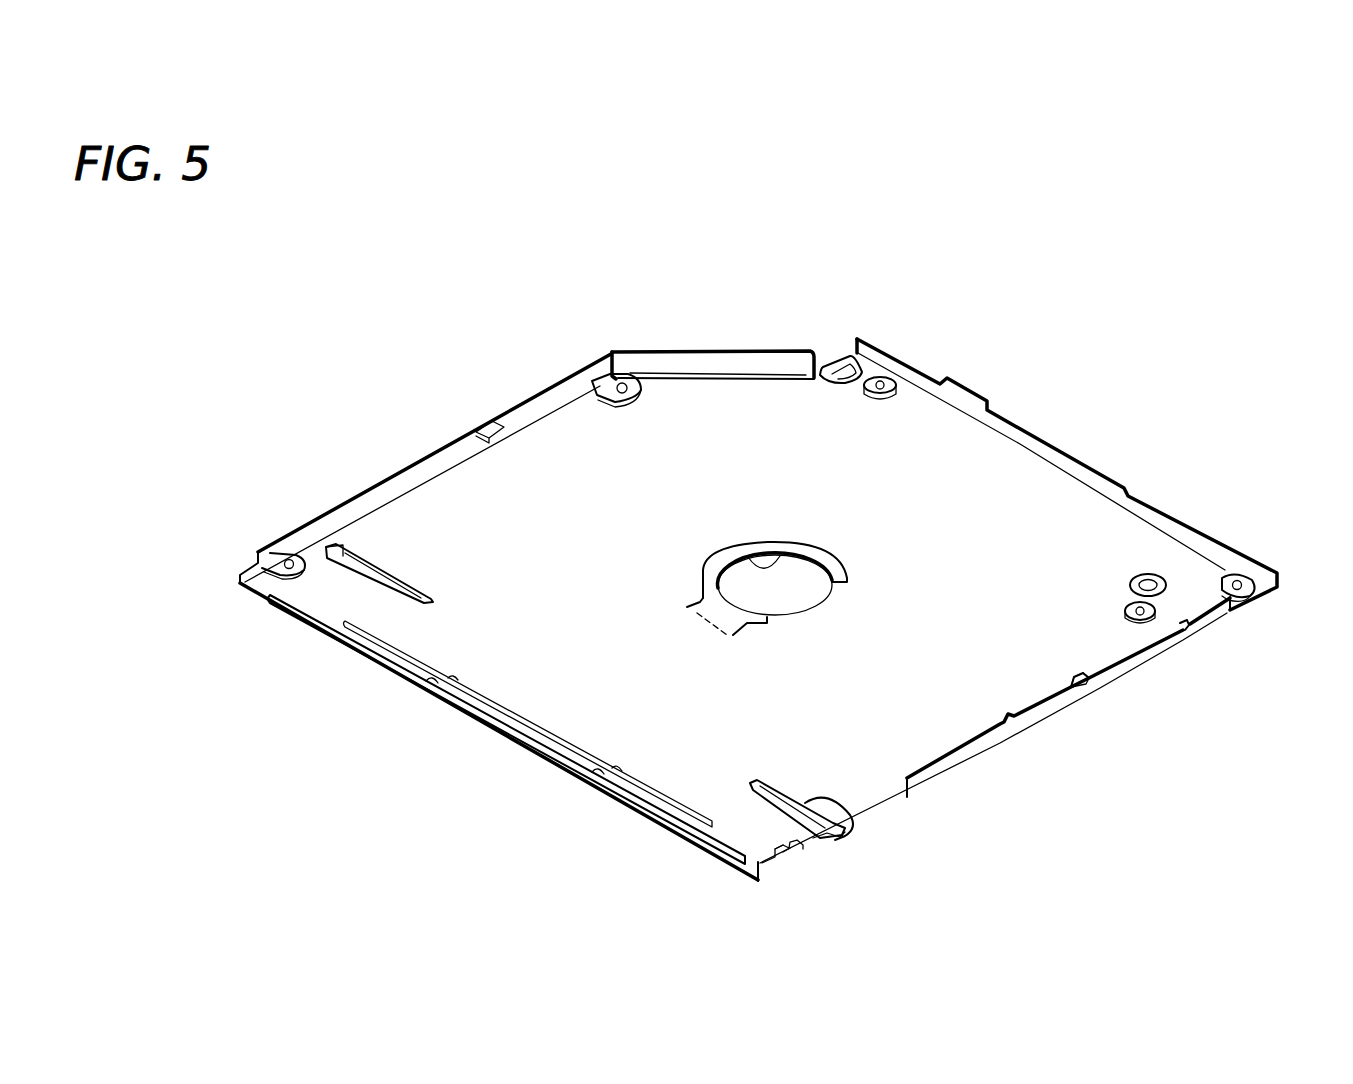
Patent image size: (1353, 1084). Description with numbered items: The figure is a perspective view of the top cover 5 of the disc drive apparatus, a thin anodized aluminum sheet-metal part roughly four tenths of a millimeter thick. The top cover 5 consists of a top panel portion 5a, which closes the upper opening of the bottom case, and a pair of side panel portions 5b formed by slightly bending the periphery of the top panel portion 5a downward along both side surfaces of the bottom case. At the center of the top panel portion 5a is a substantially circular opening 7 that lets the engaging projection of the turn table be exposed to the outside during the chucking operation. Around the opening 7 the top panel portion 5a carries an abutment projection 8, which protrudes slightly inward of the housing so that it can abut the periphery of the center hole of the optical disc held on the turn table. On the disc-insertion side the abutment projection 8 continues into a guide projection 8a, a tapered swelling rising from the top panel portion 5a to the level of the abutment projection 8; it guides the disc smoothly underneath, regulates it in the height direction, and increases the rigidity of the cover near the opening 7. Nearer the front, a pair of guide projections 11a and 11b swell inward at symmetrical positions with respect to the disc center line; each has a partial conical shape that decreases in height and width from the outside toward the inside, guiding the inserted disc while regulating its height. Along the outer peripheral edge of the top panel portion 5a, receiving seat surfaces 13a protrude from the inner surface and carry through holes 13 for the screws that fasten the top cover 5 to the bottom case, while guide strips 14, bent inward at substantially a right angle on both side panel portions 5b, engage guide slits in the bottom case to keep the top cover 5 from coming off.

The top cover 5 is at (758, 563).
The top panel portion 5a is at (997, 493).
The side panel portions 5b is at (433, 458).
The opening 7 is at (783, 569).
The abutment projection 8 is at (734, 565).
The guide projection 8a is at (703, 620).
The guide projection 11a is at (848, 832).
The guide projection 11b is at (343, 550).
The through holes 13 is at (289, 562).
The receiving seat surfaces 13a is at (273, 556).
The guide strips 14 is at (485, 422).